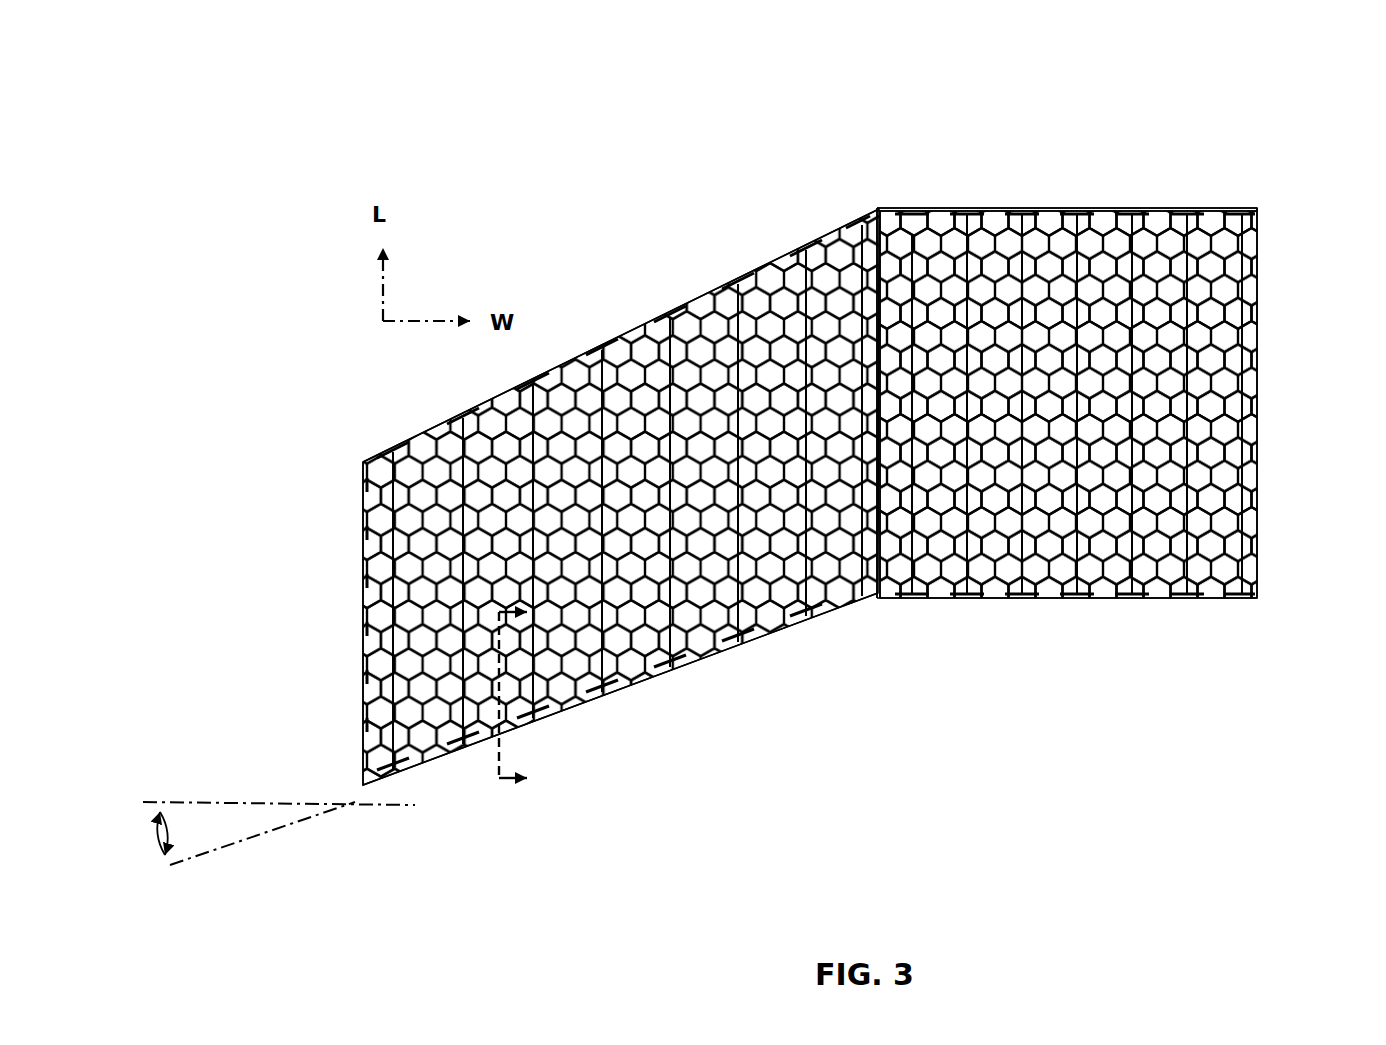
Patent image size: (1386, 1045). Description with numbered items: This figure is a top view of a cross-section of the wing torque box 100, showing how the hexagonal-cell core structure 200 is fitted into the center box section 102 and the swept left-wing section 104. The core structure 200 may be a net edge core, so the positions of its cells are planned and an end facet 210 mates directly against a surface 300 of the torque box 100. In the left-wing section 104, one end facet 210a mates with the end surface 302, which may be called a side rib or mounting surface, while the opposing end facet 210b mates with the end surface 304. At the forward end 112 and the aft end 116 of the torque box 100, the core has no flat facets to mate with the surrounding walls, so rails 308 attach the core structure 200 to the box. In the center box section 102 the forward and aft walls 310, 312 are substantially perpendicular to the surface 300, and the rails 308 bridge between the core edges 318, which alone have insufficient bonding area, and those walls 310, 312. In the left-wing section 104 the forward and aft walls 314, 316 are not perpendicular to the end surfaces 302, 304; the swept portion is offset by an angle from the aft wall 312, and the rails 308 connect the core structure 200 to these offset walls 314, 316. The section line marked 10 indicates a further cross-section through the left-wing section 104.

The wing torque box 100 is at (438, 174).
The center box section 102 is at (1068, 700).
The left-wing section 104 is at (674, 752).
The forward end 112 is at (1204, 176).
The aft end 116 is at (1228, 640).
The core structure 200 is at (1215, 340).
The end facet 210 is at (912, 237).
The end facet 210a is at (366, 662).
The opposing end facet 210b is at (868, 548).
The surface 300 is at (897, 228).
The end surface 302 is at (370, 546).
The end surface 304 is at (835, 240).
The rails 308 is at (557, 378).
The forward wall 310 is at (1068, 208).
The aft wall 312 is at (1175, 606).
The forward wall 314 is at (735, 268).
The aft wall 316 is at (735, 652).
The core edges 318 is at (1047, 237).
The section line 10 is at (540, 699).